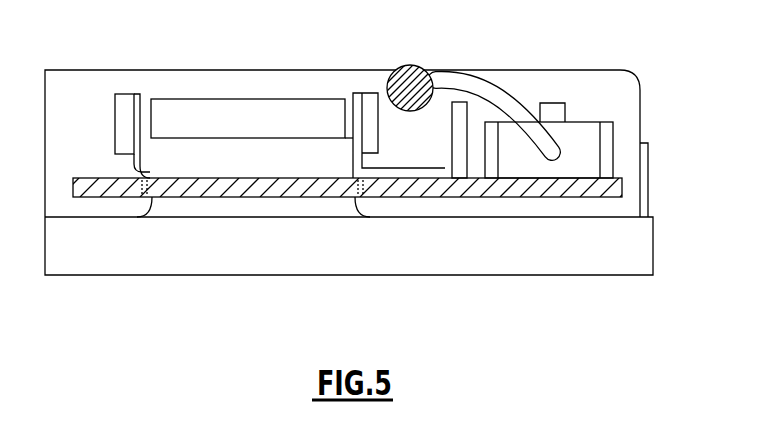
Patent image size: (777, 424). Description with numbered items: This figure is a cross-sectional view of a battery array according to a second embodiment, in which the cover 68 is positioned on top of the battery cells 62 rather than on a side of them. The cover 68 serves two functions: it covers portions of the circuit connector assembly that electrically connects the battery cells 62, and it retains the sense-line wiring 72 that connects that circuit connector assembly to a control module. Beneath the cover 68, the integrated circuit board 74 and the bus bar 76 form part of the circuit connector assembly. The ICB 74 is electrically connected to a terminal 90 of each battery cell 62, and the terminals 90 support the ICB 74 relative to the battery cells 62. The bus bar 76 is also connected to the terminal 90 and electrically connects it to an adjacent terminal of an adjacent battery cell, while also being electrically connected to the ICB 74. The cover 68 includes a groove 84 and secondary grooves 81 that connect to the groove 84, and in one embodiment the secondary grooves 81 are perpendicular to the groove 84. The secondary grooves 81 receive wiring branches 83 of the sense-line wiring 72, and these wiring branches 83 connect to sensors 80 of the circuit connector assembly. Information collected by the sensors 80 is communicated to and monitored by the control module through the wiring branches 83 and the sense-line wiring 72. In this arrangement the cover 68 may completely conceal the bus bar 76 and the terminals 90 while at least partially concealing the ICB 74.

The battery cell 62 is at (200, 252).
The cover 68 is at (86, 88).
The sense-line wiring 72 is at (410, 66).
The integrated circuit board 74 is at (468, 190).
The bus bar 76 is at (248, 121).
The sensor 80 is at (577, 152).
The secondary groove 81 is at (510, 85).
The wiring branch 83 is at (468, 77).
The groove 84 is at (386, 82).
The terminal 90 is at (267, 208).